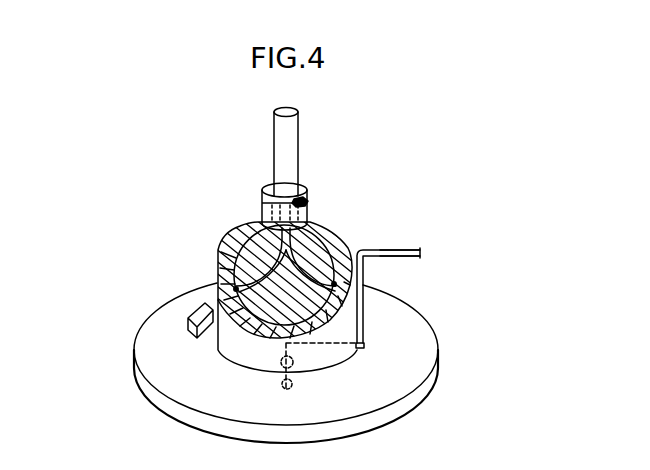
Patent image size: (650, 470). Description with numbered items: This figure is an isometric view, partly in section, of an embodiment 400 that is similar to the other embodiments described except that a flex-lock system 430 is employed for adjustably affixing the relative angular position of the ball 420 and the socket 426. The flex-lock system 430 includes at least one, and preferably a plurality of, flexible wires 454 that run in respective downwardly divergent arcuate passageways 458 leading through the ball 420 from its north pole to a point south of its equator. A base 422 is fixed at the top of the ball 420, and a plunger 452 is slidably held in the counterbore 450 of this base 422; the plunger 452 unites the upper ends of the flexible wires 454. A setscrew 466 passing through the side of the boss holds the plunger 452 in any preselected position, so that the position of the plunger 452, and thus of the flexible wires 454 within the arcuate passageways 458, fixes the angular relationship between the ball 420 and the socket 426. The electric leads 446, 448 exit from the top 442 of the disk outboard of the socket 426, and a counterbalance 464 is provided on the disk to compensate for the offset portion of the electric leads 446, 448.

The embodiment 400 is at (332, 132).
The plunger 452 is at (277, 142).
The base 422 is at (265, 202).
The setscrew 466 is at (302, 199).
The counterbore 450 is at (277, 207).
The flex-lock system 430 is at (272, 247).
The ball 420 is at (228, 238).
The socket 426 is at (217, 265).
The flexible wires 454 is at (236, 290).
The arcuate passageways 458 is at (233, 287).
The counterbalance 464 is at (190, 322).
The top of the disk 442 is at (408, 337).
The electric lead 446 is at (418, 249).
The electric lead 448 is at (396, 257).